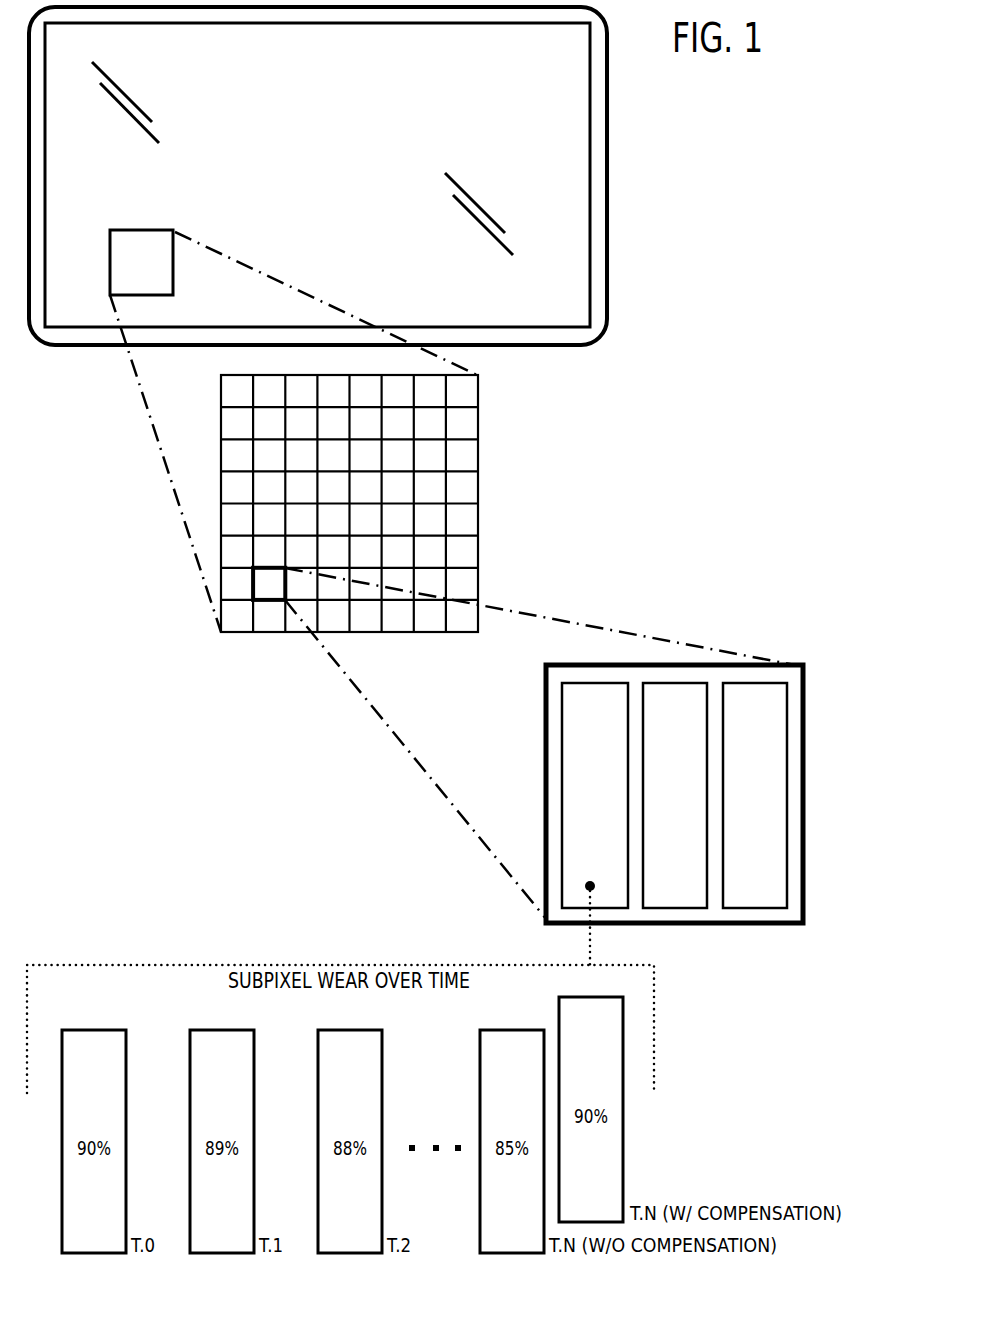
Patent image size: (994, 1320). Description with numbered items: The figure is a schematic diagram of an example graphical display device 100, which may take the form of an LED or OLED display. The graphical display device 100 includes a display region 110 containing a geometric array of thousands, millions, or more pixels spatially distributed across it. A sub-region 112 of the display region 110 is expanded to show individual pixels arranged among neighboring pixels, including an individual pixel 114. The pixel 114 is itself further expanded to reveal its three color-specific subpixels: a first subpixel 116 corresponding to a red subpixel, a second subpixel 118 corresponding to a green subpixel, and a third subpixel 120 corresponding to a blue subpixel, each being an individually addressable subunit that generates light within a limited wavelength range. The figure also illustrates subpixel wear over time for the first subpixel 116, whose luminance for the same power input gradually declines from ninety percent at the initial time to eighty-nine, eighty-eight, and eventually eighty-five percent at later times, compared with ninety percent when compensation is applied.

The graphical display device 100 is at (607, 166).
The display region 110 is at (117, 190).
The sub-region 112 is at (157, 270).
The pixel 114 is at (263, 580).
The first subpixel 116 is at (578, 846).
The second subpixel 118 is at (659, 846).
The third subpixel 120 is at (739, 846).